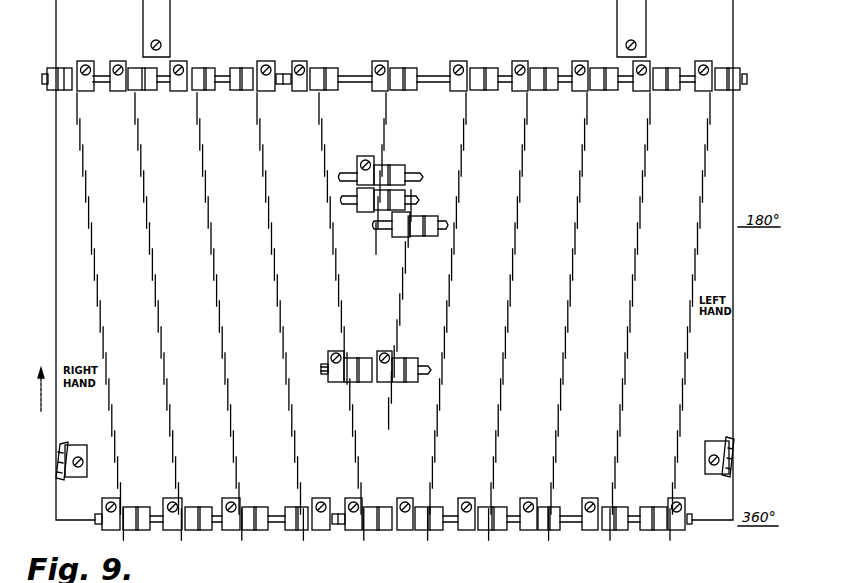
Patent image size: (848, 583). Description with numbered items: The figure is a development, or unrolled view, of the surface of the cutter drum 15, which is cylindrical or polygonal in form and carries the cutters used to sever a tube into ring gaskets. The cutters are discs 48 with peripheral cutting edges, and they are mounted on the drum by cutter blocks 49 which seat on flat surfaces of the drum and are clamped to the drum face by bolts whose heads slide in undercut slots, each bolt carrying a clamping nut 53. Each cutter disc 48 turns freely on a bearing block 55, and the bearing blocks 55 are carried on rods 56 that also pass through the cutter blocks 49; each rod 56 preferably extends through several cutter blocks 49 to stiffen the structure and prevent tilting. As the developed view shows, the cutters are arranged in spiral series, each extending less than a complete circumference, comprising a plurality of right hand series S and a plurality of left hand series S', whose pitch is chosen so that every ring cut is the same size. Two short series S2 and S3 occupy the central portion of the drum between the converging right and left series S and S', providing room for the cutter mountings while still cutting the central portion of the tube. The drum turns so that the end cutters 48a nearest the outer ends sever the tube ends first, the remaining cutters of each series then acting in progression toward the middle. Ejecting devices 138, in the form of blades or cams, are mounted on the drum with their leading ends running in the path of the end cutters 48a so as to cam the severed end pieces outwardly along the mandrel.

The cutter drum 15 is at (736, 380).
The cutter disc 48 is at (96, 272).
The end cutter disc 48a is at (73, 67).
The cutter block 49 is at (301, 92).
The clamping nut 53 is at (410, 497).
The bearing block 55 is at (236, 558).
The rod 56 is at (226, 87).
The ejecting device 138 is at (62, 459).
The right hand series S is at (213, 316).
The left hand series S' is at (507, 316).
The short series of cutters S2 is at (386, 130).
The short series of cutters S3 is at (405, 289).